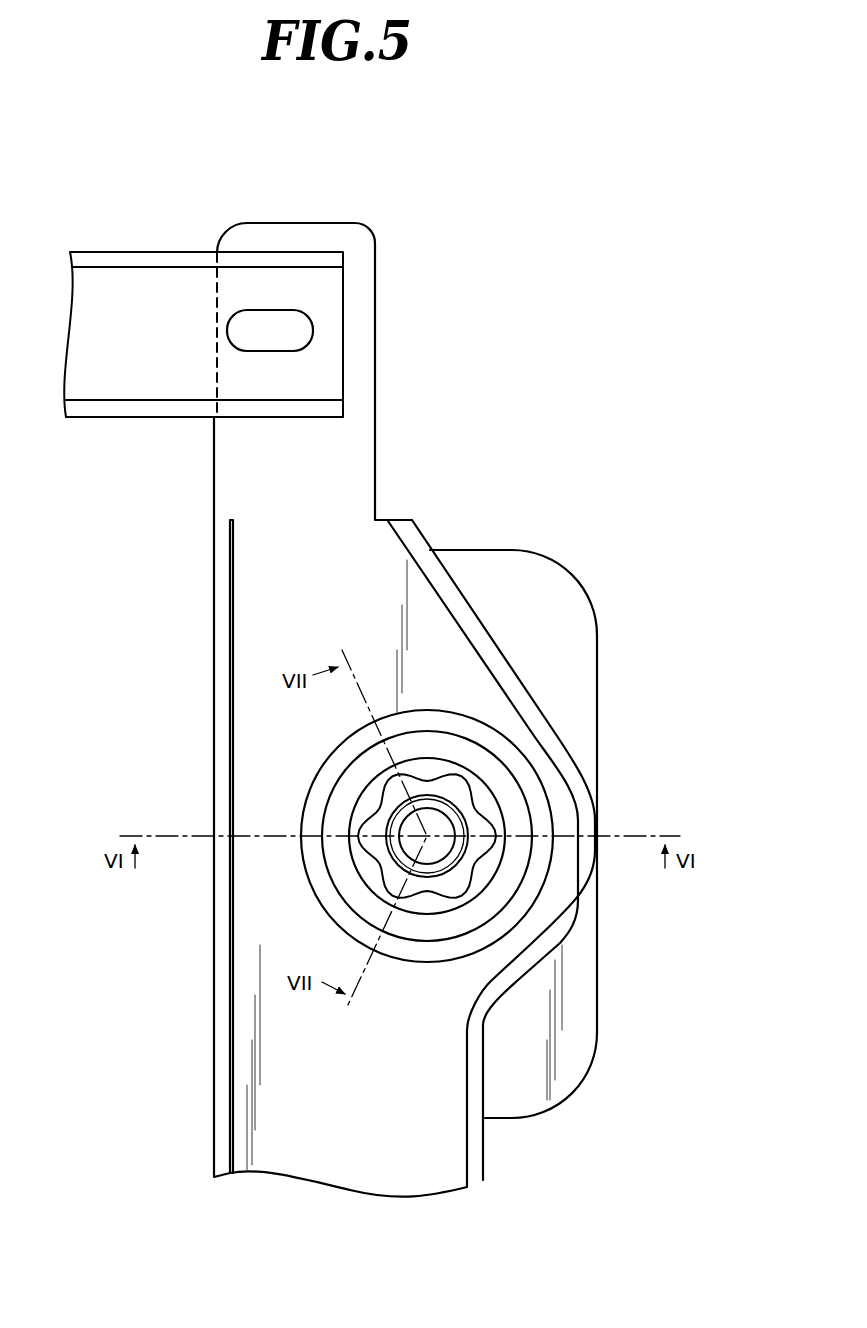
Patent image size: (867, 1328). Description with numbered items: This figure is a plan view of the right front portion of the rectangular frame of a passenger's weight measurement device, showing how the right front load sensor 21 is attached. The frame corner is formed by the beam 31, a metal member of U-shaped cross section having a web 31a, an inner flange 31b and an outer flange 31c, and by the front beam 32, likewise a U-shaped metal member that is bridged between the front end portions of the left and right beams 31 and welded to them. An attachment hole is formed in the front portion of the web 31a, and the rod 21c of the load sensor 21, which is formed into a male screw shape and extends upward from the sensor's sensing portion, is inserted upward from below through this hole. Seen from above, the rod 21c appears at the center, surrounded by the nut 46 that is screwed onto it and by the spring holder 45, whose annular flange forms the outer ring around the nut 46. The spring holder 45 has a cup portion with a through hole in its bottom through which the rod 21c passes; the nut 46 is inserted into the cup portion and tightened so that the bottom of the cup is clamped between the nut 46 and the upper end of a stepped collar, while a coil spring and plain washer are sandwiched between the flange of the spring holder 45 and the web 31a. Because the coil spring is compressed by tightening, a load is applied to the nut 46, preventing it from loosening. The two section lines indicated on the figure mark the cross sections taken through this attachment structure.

The load sensor 21 is at (558, 598).
The rod 21c is at (442, 823).
The beam 31 is at (364, 750).
The web 31a is at (368, 1165).
The inner flange 31b is at (222, 1118).
The outer flange 31c is at (475, 1158).
The front beam 32 is at (152, 295).
The spring holder 45 is at (497, 747).
The nut 46 is at (368, 805).